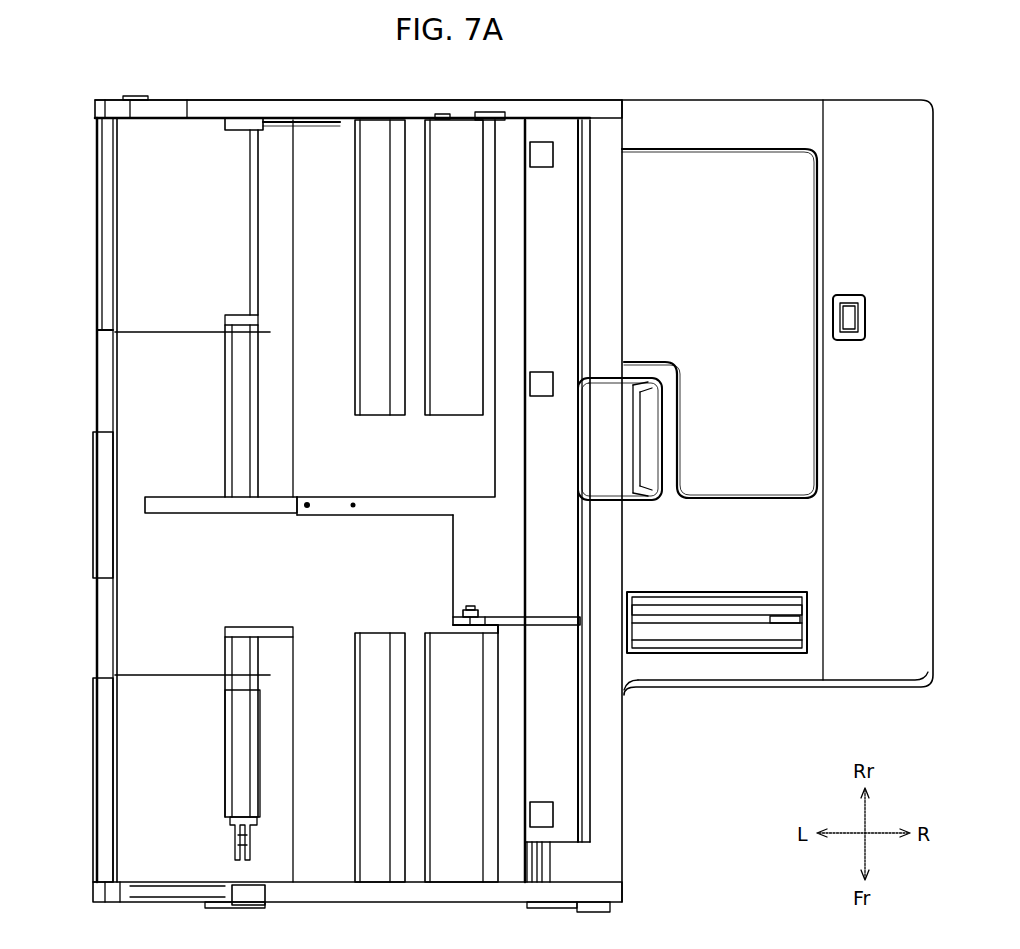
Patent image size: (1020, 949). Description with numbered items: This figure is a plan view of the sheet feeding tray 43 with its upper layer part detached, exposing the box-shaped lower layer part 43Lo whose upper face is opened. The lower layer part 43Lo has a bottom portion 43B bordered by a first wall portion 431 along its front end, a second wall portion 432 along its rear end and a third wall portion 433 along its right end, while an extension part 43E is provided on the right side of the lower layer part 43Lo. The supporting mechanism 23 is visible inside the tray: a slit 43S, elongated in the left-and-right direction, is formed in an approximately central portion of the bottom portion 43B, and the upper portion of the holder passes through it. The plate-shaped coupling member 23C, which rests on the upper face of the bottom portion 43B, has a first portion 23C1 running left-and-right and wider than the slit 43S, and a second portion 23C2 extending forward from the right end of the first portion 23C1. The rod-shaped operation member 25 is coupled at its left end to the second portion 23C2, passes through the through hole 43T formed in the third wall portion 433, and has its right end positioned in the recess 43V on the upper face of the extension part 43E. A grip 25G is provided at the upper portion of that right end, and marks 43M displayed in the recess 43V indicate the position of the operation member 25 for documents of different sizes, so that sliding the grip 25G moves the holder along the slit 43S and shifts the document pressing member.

The sheet feeding tray 43 is at (733, 802).
The second wall portion 432 is at (96, 108).
The first wall portion 431 is at (93, 890).
The lower layer part 43Lo is at (106, 358).
The bottom portion 43B is at (143, 410).
The supporting mechanism 23 is at (204, 568).
The slit 43S is at (199, 504).
The coupling member 23C is at (396, 368).
The first portion 23C1 is at (392, 518).
The second portion 23C2 is at (450, 571).
The operation member 25 is at (541, 616).
The through hole 43T is at (576, 632).
The third wall portion 433 is at (623, 806).
The extension part 43E is at (796, 688).
The recess 43V is at (731, 654).
The grip 25G is at (808, 618).
The marks 43M is at (746, 635).